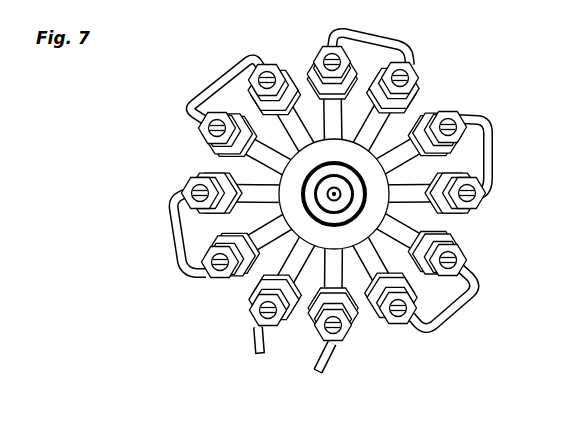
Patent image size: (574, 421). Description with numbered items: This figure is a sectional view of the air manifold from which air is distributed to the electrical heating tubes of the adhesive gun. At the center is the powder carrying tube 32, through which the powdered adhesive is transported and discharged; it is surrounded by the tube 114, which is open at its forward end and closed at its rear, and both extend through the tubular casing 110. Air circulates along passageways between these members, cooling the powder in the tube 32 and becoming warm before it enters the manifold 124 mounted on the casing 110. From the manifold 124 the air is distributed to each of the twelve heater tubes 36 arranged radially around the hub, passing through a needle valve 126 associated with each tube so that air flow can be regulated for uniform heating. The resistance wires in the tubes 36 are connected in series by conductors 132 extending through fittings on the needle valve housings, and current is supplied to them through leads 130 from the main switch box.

The heater tube 36 is at (262, 162).
The powder carrying tube 32 is at (316, 190).
The manifold 124 is at (380, 183).
The needle valve 126 is at (431, 116).
The conductor 132 is at (412, 53).
The tube 114 is at (334, 194).
The tubular casing 110 is at (334, 194).
The lead 130 is at (318, 375).